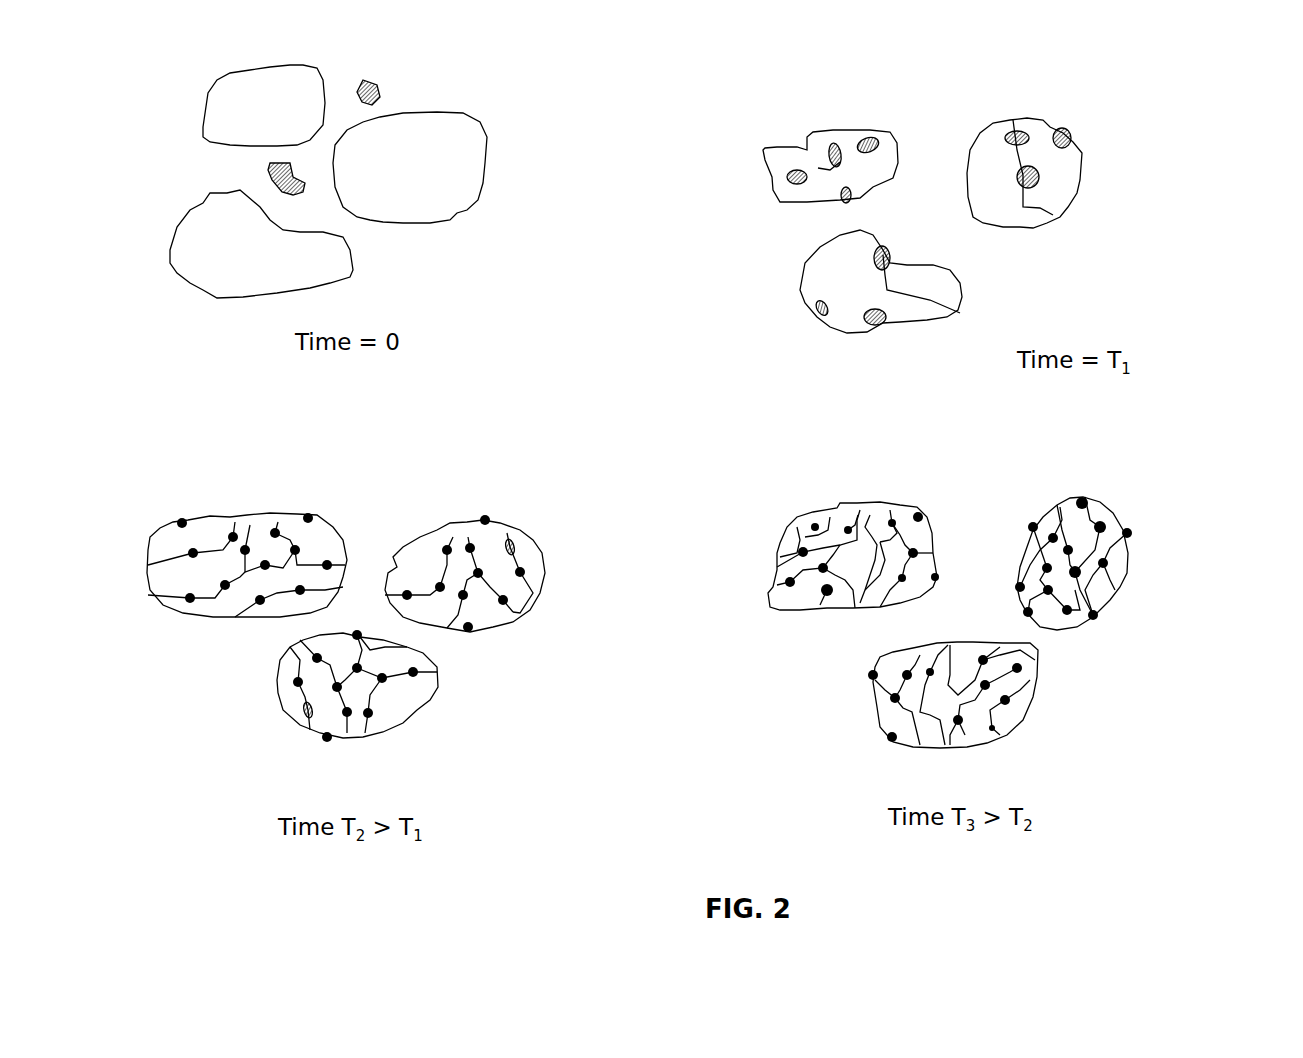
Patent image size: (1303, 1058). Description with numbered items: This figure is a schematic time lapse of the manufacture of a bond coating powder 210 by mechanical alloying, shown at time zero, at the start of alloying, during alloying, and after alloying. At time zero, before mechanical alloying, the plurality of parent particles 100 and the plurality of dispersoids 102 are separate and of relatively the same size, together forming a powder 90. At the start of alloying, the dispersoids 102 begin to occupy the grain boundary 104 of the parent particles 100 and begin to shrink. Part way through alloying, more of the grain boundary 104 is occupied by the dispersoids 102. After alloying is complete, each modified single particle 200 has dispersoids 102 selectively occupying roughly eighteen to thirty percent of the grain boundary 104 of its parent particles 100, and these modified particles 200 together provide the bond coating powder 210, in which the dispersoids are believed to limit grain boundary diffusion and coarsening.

The powder 90 is at (503, 108).
The parent particles 100 is at (462, 210).
The dispersoids 102 is at (380, 79).
The grain boundary 104 is at (818, 168).
The modified single particle 200 is at (779, 511).
The bond coating powder 210 is at (1154, 430).